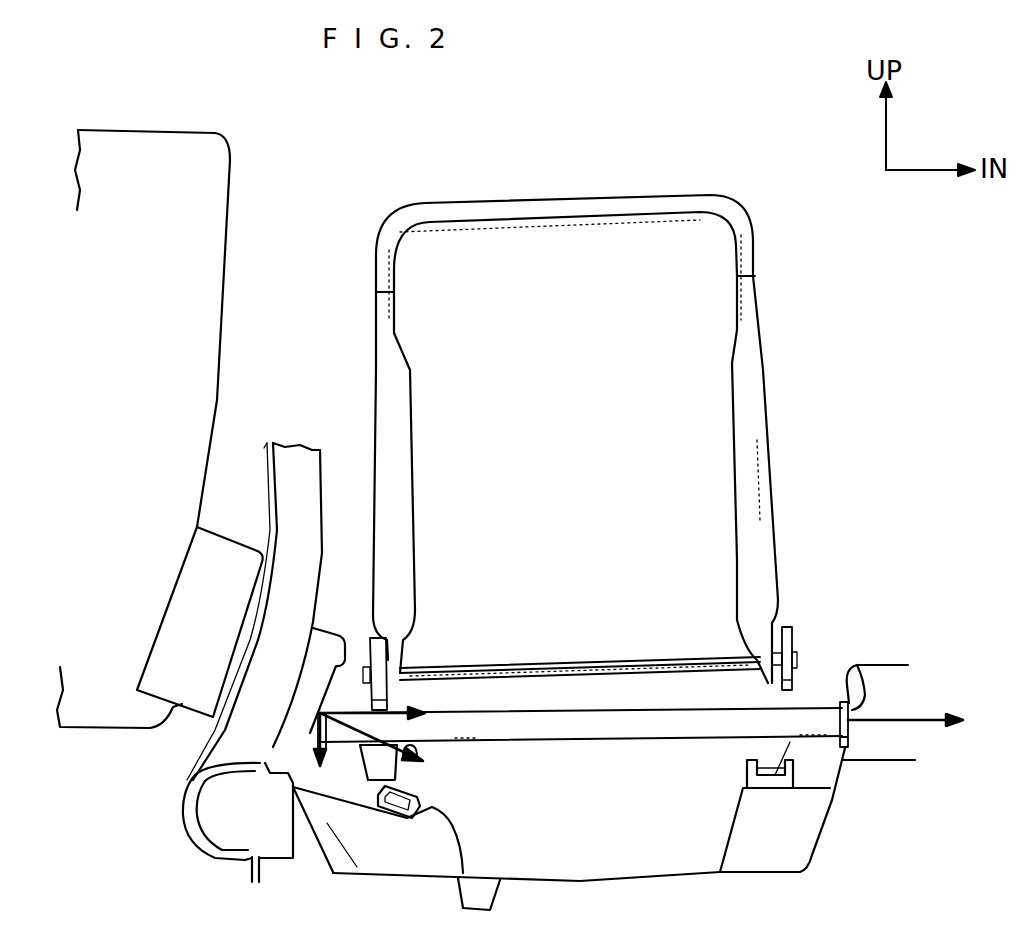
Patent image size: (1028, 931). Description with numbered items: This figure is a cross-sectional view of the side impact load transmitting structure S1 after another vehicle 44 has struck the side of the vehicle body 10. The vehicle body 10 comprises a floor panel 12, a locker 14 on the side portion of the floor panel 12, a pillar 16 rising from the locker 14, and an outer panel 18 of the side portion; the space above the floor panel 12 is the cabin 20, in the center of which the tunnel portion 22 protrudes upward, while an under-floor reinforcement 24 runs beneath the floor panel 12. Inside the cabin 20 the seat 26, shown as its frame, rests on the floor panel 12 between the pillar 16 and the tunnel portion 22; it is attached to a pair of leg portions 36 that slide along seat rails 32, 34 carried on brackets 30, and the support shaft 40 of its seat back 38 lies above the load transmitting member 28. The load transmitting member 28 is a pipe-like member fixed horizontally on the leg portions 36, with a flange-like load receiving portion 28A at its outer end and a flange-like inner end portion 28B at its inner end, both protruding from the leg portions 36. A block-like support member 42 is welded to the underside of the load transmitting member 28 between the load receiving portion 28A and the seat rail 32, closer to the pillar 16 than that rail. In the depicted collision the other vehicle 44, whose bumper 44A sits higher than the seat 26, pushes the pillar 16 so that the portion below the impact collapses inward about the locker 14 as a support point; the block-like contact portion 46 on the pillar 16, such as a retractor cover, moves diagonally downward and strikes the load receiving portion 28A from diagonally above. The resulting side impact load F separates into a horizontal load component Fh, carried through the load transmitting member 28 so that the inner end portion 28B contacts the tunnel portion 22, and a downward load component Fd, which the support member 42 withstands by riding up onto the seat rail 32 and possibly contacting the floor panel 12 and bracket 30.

The vehicle body 10 is at (170, 825).
The floor panel 12 is at (633, 873).
The locker 14 is at (200, 830).
The pillar 16 is at (320, 477).
The outer panel 18 is at (265, 442).
The cabin 20 is at (445, 195).
The tunnel portion 22 is at (907, 665).
The under-floor reinforcement 24 is at (458, 907).
The vehicular seat 26 is at (548, 197).
The load transmitting member 28 is at (588, 741).
The load receiving portion 28A is at (313, 737).
The inner end portion 28B is at (852, 667).
The bracket 30 is at (463, 857).
The seat rail 32 is at (432, 812).
The seat rail 34 is at (747, 773).
The leg portion 36 is at (415, 770).
The seat back 38 is at (778, 410).
The support shaft 40 is at (533, 660).
The support member 42 is at (367, 768).
The other vehicle 44 is at (233, 181).
The bumper 44A is at (192, 716).
The contact portion 46 is at (347, 657).
The side impact load transmitting structure S1 is at (352, 240).
The side impact load F is at (428, 735).
The horizontal load component Fh is at (400, 703).
The downward load component Fd is at (283, 767).